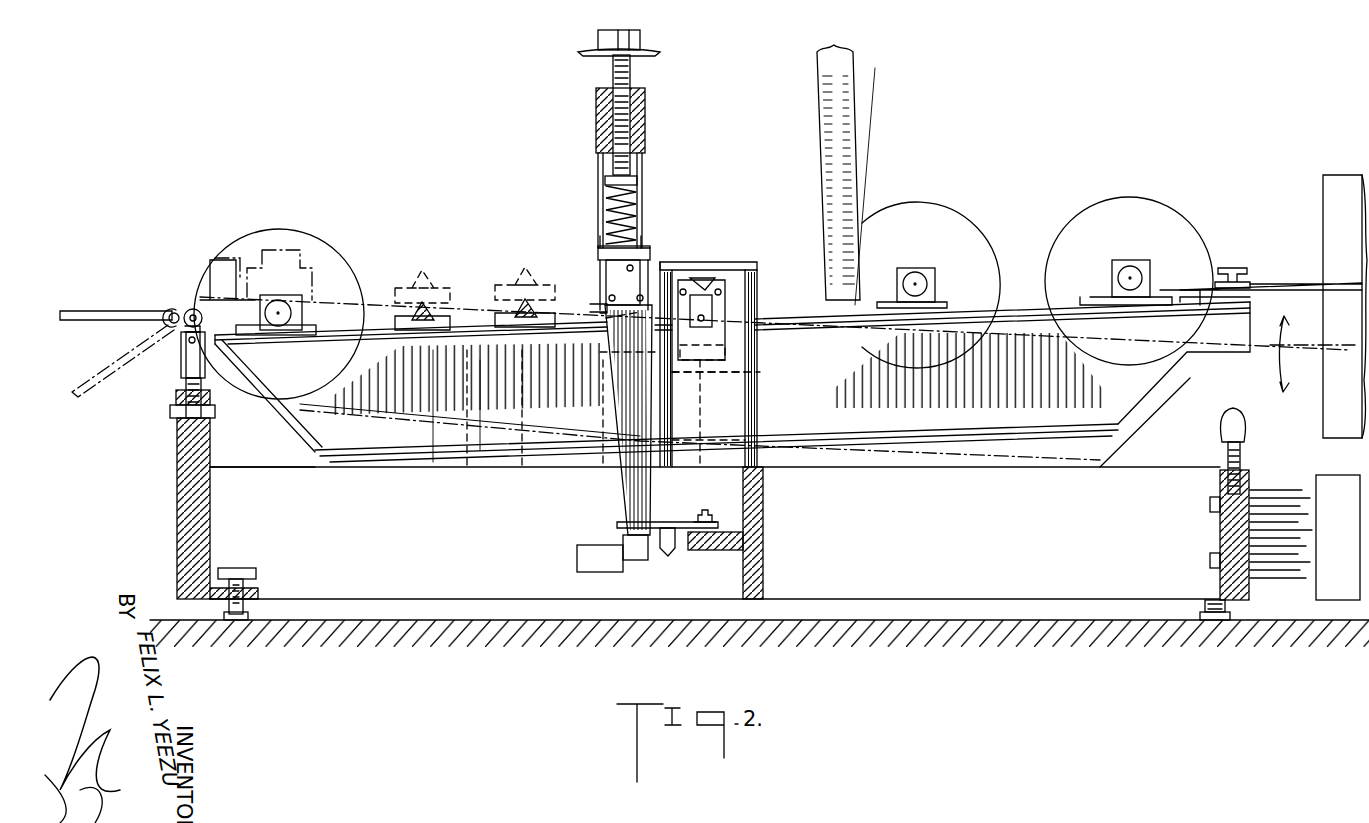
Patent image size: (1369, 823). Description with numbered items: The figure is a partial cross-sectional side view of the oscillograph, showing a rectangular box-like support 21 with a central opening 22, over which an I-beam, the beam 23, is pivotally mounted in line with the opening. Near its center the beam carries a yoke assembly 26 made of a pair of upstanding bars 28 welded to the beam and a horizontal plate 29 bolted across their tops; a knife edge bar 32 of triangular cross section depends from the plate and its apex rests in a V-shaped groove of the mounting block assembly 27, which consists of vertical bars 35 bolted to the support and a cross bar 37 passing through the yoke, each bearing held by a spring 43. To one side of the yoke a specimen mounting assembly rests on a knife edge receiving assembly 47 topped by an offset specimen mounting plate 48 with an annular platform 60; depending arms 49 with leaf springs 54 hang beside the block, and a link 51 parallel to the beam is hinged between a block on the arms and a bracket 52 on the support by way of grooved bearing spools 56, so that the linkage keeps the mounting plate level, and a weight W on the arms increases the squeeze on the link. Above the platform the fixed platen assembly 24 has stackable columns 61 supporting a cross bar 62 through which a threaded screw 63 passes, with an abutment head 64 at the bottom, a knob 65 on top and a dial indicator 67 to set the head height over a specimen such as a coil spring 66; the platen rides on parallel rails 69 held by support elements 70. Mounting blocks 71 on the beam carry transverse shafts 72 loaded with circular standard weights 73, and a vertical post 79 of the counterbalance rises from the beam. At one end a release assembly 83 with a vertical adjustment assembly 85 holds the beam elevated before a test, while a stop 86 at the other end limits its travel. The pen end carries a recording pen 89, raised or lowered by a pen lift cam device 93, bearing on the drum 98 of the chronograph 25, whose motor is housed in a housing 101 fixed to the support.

The support 21 is at (1020, 580).
The central opening 22 is at (1218, 532).
The beam 23 is at (960, 418).
The fixed platen assembly 24 is at (543, 150).
The chronograph 25 is at (1360, 180).
The yoke assembly 26 is at (770, 385).
The mounting block assembly 27 is at (725, 290).
The vertically upstanding bars 28 is at (746, 412).
The horizontal plate 29 is at (740, 270).
The knife edge bar 32 is at (660, 326).
The vertically disposed bars 35 is at (720, 462).
The cross bar 37 is at (726, 352).
The spring 43 is at (712, 310).
The knife edge receiving assembly 47 is at (590, 251).
The specimen mounting plate 48 is at (645, 250).
The depending arms 49 is at (628, 486).
The link 51 is at (628, 525).
The bracket 52 is at (710, 550).
The leaf spring 54 is at (606, 270).
The bearing spool 56 is at (704, 510).
The platform 60 is at (602, 252).
The vertical columns 61 is at (604, 165).
The horizontal cross bar 62 is at (646, 122).
The threaded screw 63 is at (635, 78).
The abutment head 64 is at (637, 180).
The knob 65 is at (642, 40).
The coil spring 66 is at (636, 212).
The dial indicator 67 is at (585, 54).
The parallel rails 69 is at (528, 362).
The support elements 70 is at (488, 462).
The mounting blocks 71 is at (280, 325).
The shaft 72 is at (296, 322).
The standard weights 73 is at (305, 240).
The vertical post 79 is at (822, 88).
The release assembly 83 is at (157, 278).
The vertical adjustment assembly 85 is at (183, 380).
The stop 86 is at (1236, 425).
The recording pen 89 is at (1283, 290).
The pen lift cam device 93 is at (1236, 268).
The drum 98 is at (1330, 190).
The housing 101 is at (1334, 480).
The weight W is at (578, 560).